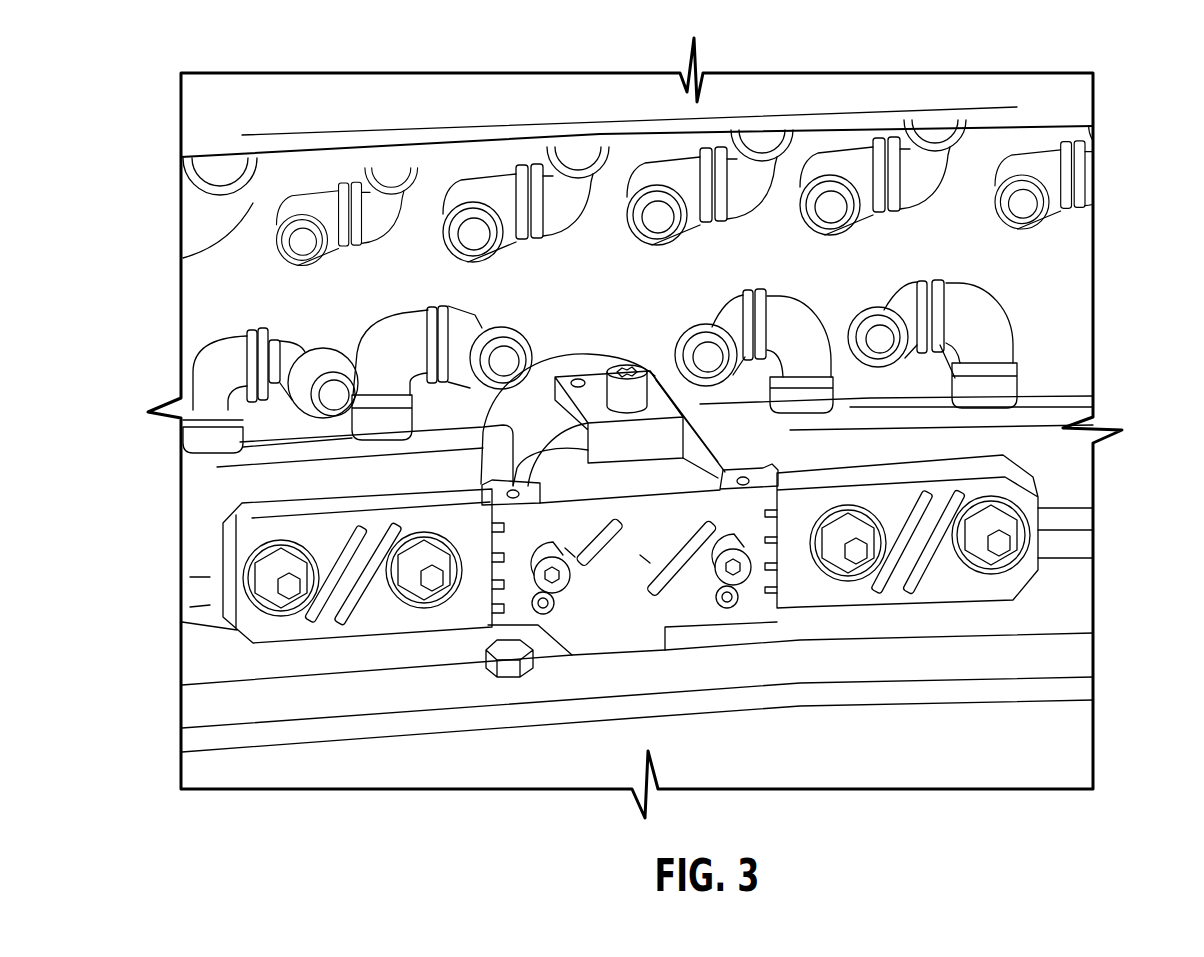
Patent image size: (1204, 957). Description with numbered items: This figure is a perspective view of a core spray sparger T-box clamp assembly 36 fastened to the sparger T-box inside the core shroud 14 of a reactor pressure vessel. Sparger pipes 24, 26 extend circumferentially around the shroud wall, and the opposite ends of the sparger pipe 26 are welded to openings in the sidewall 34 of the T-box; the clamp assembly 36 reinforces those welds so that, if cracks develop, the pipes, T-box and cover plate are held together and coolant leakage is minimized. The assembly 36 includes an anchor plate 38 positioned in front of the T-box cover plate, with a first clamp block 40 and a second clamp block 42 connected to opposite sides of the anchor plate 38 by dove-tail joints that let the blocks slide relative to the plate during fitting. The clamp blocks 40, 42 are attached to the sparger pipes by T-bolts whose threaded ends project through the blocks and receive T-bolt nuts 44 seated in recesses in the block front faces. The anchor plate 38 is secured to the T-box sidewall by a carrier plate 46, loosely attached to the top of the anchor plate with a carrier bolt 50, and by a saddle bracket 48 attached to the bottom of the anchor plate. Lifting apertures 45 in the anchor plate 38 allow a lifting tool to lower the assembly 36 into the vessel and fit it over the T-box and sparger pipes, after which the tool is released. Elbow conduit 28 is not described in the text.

The core shroud 14 is at (1067, 303).
The sparger pipe 24 is at (1068, 102).
The sparger pipe 26 is at (1073, 475).
The elbow conduit 28 is at (217, 373).
The sidewall of the sparger T-box 34 is at (538, 390).
The core spray sparger T-box clamp assembly 36 is at (680, 598).
The anchor plate 38 is at (583, 628).
The first clamp block 40 is at (322, 622).
The second clamp block 42 is at (1007, 585).
The T-bolt nuts 44 is at (260, 580).
The lifting apertures 45 is at (512, 494).
The carrier plate 46 is at (660, 440).
The saddle bracket 48 is at (737, 608).
The carrier bolt 50 is at (633, 366).